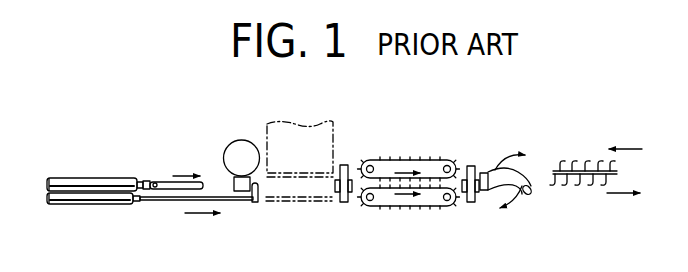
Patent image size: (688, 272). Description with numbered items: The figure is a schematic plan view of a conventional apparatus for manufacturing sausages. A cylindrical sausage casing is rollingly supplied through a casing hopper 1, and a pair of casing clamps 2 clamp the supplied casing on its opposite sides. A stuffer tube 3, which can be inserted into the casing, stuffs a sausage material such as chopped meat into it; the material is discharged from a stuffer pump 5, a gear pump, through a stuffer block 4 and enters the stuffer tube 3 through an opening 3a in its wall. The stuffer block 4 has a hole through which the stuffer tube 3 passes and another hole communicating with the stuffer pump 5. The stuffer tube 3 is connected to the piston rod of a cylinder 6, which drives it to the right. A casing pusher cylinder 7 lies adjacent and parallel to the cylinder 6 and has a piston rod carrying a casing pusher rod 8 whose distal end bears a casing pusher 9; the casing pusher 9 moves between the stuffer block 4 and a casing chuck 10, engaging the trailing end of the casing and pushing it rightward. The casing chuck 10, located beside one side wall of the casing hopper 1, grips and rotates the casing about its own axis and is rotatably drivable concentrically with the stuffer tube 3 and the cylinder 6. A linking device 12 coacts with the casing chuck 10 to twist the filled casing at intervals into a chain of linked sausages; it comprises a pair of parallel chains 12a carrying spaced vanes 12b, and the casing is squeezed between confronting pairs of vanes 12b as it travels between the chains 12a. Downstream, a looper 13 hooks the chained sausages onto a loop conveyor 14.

The casing hopper 1 is at (327, 130).
The casing clamps 2 is at (293, 178).
The stuffer tube 3 is at (165, 182).
The opening 3a is at (153, 184).
The stuffer block 4 is at (234, 180).
The stuffer pump 5 is at (234, 145).
The cylinder 6 is at (83, 180).
The casing pusher cylinder 7 is at (105, 205).
The casing pusher rod 8 is at (167, 201).
The casing pusher 9 is at (259, 195).
The casing chuck 10 is at (350, 202).
The linking device 12 is at (415, 157).
The chains 12a is at (432, 160).
The vanes 12b is at (385, 158).
The looper 13 is at (527, 153).
The loop conveyor 14 is at (580, 156).